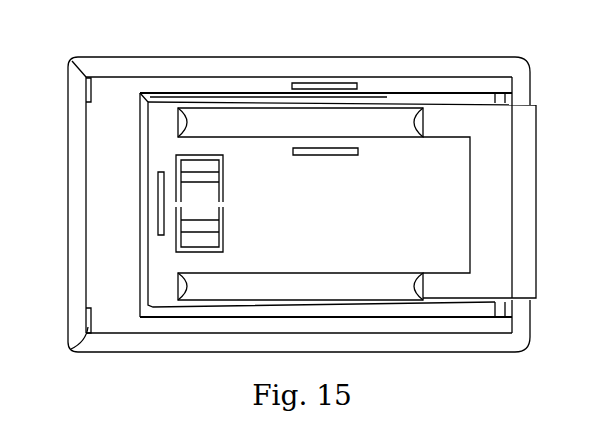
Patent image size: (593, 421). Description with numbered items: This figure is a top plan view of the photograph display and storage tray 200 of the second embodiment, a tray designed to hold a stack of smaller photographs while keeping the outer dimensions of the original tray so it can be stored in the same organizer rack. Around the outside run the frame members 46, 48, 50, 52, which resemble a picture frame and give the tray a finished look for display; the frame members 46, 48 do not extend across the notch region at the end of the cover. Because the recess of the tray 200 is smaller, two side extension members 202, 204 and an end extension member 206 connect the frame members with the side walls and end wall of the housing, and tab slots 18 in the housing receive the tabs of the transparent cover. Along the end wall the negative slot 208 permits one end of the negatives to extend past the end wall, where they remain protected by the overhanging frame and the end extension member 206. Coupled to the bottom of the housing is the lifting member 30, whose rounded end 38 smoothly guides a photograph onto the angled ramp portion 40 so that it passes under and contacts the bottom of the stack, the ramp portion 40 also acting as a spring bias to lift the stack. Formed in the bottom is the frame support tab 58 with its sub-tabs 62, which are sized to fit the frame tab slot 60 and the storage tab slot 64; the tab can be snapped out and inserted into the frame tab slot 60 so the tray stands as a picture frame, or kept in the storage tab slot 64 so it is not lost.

The photograph display and storage tray 200 is at (352, 44).
The tab slot 18 is at (86, 77).
The frame member 50 is at (147, 57).
The frame member 52 is at (223, 345).
The frame member 46 is at (525, 79).
The frame member 48 is at (525, 332).
The negative slot 208 is at (112, 190).
The side extension member 202 is at (410, 83).
The side extension member 204 is at (342, 325).
The end extension member 206 is at (157, 190).
The lifting member 30 is at (495, 185).
The rounded end 38 is at (522, 212).
The angled ramp portion 40 is at (450, 123).
The frame tab slot 60 is at (310, 83).
The storage tab slot 64 is at (322, 156).
The frame support tab 58 is at (198, 205).
The sub-tab 62 is at (207, 180).